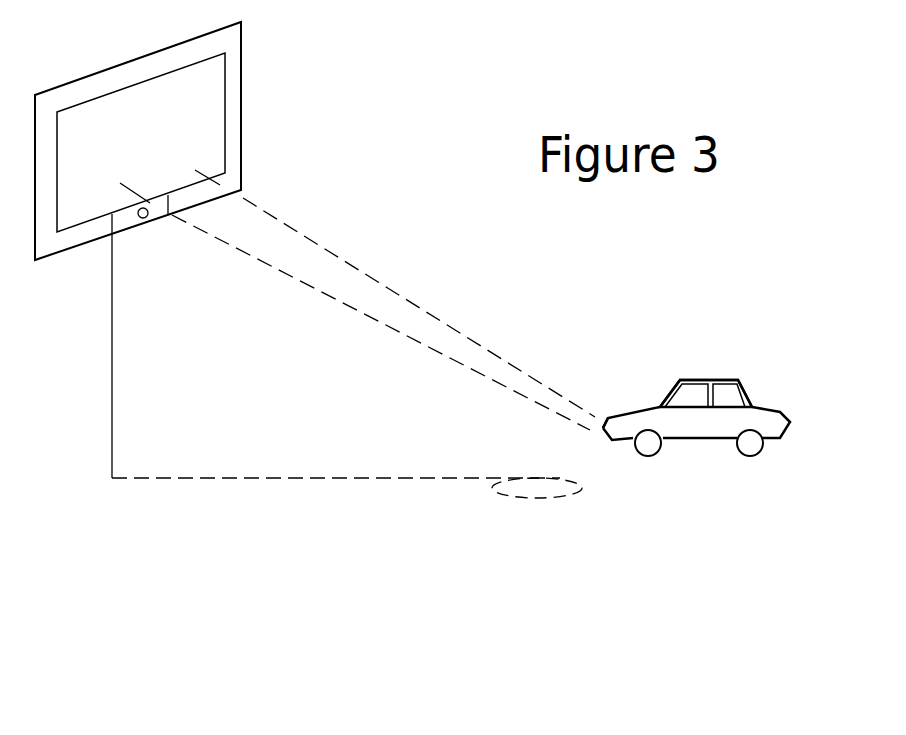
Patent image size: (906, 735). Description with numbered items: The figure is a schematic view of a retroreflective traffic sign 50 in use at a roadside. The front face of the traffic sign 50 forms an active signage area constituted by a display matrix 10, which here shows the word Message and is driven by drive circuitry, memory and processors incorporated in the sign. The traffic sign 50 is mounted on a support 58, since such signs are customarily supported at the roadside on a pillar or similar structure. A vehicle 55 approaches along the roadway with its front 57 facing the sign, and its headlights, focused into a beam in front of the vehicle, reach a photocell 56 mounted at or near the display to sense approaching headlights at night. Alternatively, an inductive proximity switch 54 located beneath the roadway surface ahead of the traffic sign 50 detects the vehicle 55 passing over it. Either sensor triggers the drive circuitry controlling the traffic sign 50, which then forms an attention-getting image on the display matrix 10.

The display matrix 10 is at (210, 143).
The retroreflective traffic sign 50 is at (105, 82).
The proximity switch 54 is at (508, 495).
The vehicle 55 is at (757, 418).
The photocell 56 is at (143, 220).
The front of vehicle 57 is at (605, 420).
The support pole 58 is at (112, 452).